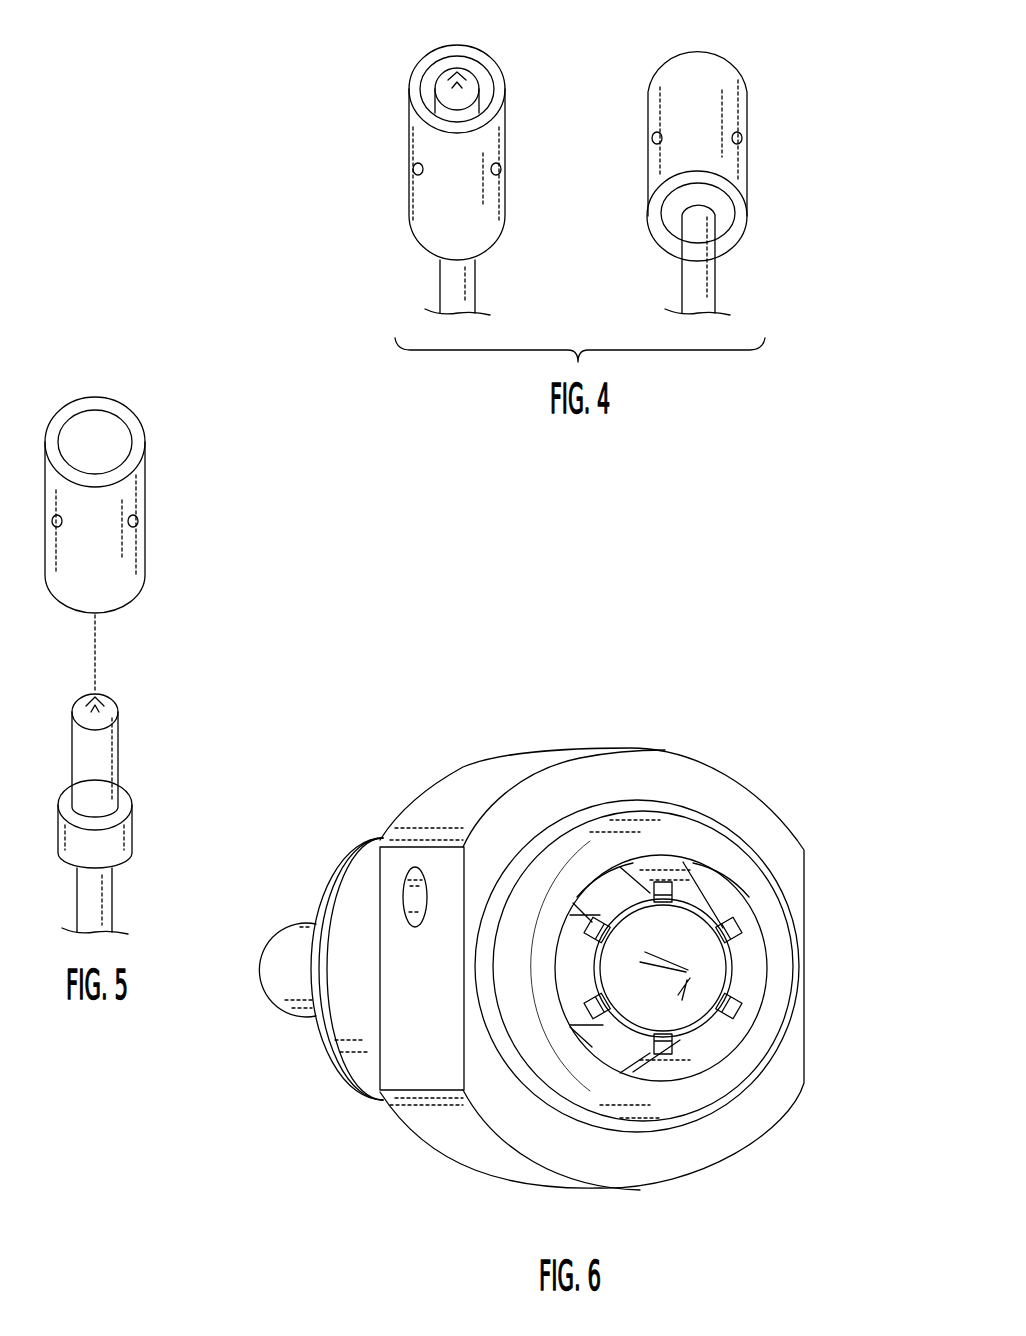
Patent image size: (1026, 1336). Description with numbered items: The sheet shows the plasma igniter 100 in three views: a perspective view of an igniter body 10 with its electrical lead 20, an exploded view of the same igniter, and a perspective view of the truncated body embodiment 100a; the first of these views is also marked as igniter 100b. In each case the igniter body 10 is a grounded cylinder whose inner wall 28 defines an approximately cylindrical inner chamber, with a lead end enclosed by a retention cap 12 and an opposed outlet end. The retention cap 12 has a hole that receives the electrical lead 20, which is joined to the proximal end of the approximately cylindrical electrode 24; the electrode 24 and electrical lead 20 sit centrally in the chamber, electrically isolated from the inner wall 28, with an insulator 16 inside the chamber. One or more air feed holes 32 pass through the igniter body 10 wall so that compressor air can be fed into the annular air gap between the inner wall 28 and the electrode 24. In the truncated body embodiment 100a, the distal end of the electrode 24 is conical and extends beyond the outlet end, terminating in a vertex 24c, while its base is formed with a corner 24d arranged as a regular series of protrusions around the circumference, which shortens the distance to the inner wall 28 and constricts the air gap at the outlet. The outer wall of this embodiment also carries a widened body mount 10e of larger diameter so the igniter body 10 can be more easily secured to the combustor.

In FIG. 4, the igniter body 10 is at (730, 103).
In FIG. 5, the igniter body 10 is at (147, 477).
In FIG. 6, the igniter body 10 is at (807, 952).
In FIG. 6, the widened body mount 10e is at (557, 756).
In FIG. 6, the retention cap 12 is at (332, 878).
In FIG. 5, the insulator 16 is at (132, 822).
In FIG. 6, the insulator 16 is at (573, 892).
In FIG. 5, the electrical lead 20 is at (112, 902).
In FIG. 6, the electrical lead 20 is at (293, 987).
In FIG. 5, the electrode 24 is at (118, 733).
In FIG. 6, the electrode 24 is at (617, 886).
In FIG. 6, the vertex 24c is at (690, 974).
In FIG. 6, the corner 24d is at (729, 929).
In FIG. 6, the inner wall 28 is at (712, 1054).
In FIG. 4, the air feed hole 32 is at (742, 140).
In FIG. 5, the air feed hole 32 is at (139, 522).
In FIG. 6, the air feed hole 32 is at (407, 887).
In FIG. 6, the plasma igniter 100 is at (372, 1210).
In FIG. 6, the truncated body embodiment 100a is at (408, 1165).
In FIG. 4, the second assembly part 100b is at (383, 185).